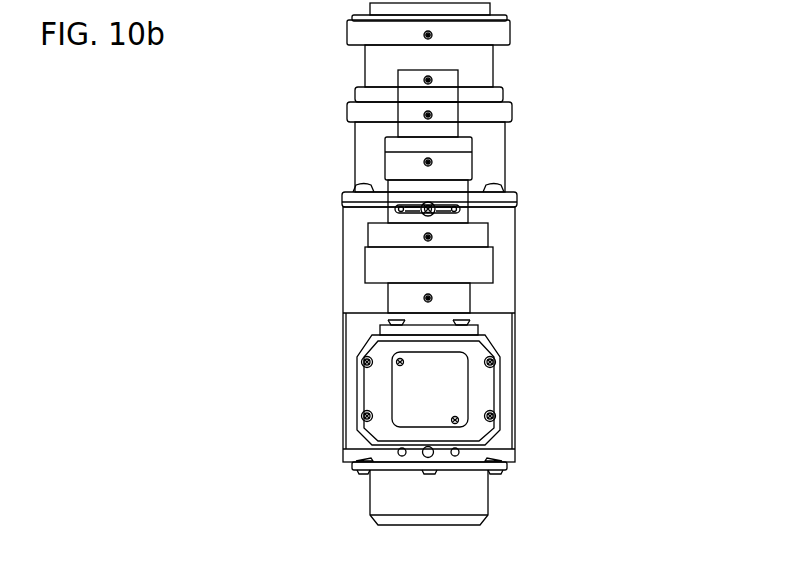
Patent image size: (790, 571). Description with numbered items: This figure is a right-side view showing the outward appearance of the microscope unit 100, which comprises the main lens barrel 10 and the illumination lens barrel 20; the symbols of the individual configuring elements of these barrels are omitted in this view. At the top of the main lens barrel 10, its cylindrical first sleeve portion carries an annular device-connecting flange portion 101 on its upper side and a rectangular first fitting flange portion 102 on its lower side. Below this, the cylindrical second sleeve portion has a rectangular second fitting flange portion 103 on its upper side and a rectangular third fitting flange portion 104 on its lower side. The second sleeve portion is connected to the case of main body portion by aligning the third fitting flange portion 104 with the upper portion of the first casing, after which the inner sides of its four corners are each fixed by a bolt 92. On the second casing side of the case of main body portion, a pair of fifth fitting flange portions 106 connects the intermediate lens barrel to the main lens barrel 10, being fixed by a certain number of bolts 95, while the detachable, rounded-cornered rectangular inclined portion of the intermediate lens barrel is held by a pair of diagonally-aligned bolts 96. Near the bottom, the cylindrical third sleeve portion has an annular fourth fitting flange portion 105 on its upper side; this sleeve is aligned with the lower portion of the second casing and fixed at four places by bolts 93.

The microscope unit 100 is at (583, 82).
The main lens barrel 10 is at (281, 162).
The illumination lens barrel 20 is at (481, 167).
The device-connecting flange portion 101 is at (354, 33).
The first fitting flange portion 102 is at (354, 95).
The second fitting flange portion 103 is at (354, 113).
The bolt 92 is at (352, 191).
The third fitting flange portion 104 is at (350, 200).
The fifth fitting flange portion 106 is at (492, 390).
The bolt 95 is at (496, 362).
The bolt 96 is at (396, 364).
The fourth fitting flange portion 105 is at (352, 466).
The bolt 93 is at (369, 472).